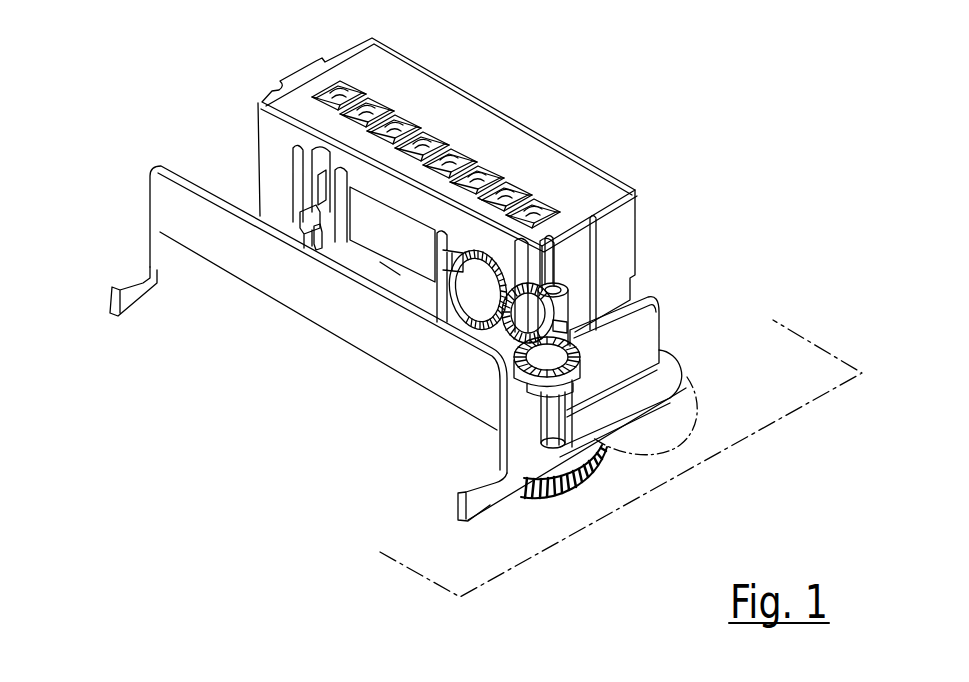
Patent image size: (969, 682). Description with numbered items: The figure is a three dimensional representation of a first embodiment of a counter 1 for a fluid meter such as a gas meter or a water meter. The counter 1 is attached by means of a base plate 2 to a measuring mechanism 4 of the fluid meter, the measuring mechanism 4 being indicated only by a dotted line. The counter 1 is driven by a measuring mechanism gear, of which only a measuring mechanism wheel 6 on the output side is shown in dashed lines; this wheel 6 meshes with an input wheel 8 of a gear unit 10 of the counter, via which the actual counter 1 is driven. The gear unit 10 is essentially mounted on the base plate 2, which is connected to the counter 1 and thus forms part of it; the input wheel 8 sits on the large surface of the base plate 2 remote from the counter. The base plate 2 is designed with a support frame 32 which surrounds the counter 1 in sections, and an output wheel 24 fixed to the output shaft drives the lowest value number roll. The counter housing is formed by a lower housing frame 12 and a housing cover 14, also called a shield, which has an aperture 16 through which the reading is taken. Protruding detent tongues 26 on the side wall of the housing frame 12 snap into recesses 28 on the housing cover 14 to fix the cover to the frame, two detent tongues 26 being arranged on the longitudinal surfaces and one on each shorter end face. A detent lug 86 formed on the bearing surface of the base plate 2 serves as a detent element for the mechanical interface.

The counter 1 is at (533, 106).
The base plate 2 is at (300, 335).
The measuring mechanism 4 is at (777, 322).
The measuring mechanism wheel 6 is at (697, 429).
The input wheel 8 is at (565, 498).
The gear unit 10 is at (526, 415).
The housing frame 12 is at (390, 277).
The housing cover 14 is at (580, 187).
The aperture 16 is at (437, 124).
The output wheel 24 is at (472, 328).
The detent tongues 26 is at (306, 220).
The recesses 28 is at (328, 182).
The support frame 32 is at (627, 342).
The detent lug 86 is at (316, 222).